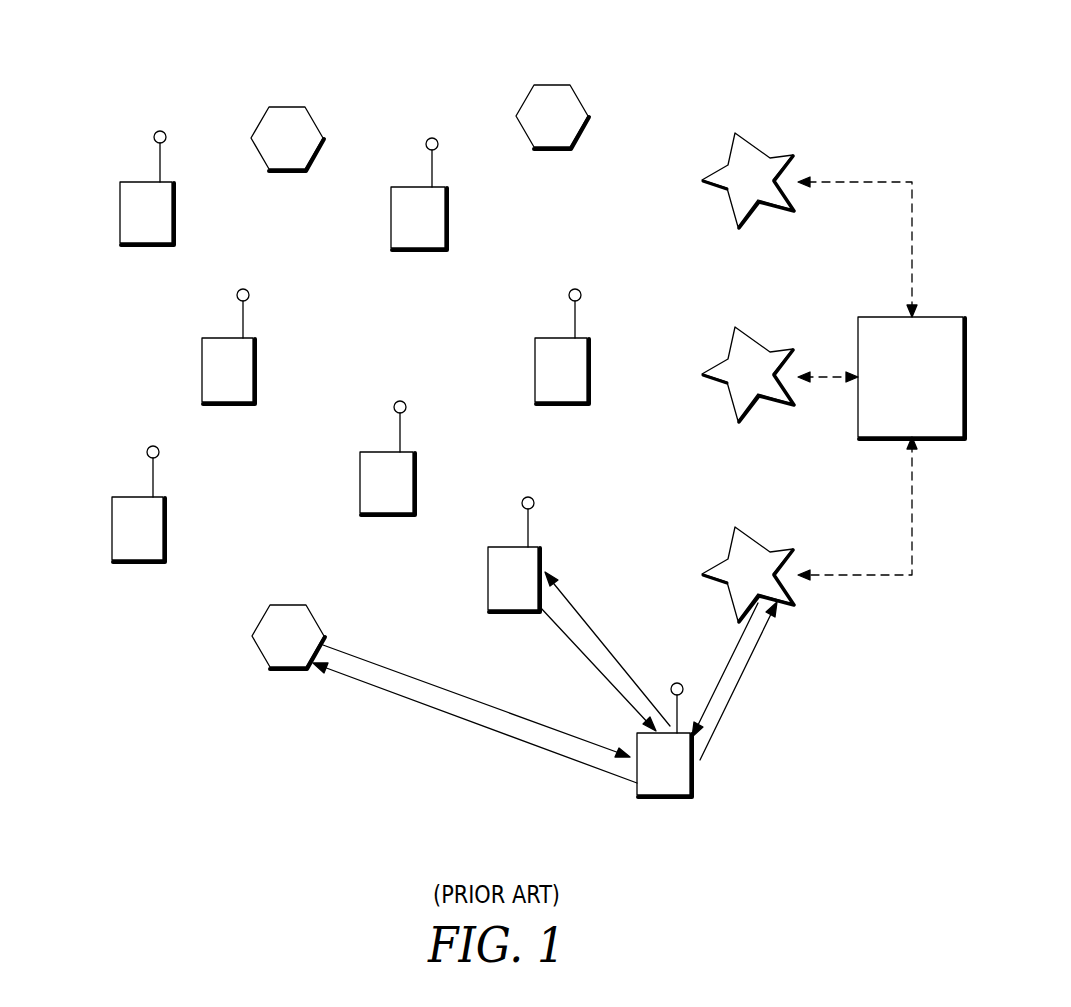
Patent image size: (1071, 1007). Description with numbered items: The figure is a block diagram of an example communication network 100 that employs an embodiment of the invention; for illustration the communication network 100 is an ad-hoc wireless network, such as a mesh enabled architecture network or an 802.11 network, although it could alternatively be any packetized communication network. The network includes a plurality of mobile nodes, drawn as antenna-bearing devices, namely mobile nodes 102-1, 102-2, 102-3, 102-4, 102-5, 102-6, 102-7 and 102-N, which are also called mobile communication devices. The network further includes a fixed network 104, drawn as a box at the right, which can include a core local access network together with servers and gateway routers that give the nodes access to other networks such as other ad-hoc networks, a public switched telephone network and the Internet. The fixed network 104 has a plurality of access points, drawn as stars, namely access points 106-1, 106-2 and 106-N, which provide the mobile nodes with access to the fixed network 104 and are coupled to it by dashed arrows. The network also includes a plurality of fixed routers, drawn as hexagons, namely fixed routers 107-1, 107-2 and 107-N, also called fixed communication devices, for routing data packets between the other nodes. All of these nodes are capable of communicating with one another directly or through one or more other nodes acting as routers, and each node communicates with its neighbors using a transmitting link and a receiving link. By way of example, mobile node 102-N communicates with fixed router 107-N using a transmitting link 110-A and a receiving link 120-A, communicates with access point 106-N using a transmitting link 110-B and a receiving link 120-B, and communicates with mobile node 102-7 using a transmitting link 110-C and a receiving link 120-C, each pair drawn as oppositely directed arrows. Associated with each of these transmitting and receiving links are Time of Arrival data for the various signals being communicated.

The communication network 100 is at (878, 57).
The mobile node 102-1 is at (124, 182).
The mobile node 102-2 is at (396, 187).
The mobile node 102-3 is at (207, 338).
The mobile node 102-4 is at (127, 497).
The mobile node 102-5 is at (365, 452).
The mobile node 102-6 is at (540, 338).
The mobile node 102-7 is at (494, 547).
The mobile node 102-N is at (664, 797).
The fixed network 104 is at (866, 317).
The access point 106-1 is at (719, 171).
The access point 106-2 is at (718, 365).
The access point 106-N is at (720, 565).
The fixed router 107-1 is at (287, 107).
The fixed router 107-2 is at (546, 85).
The fixed router 107-N is at (274, 605).
The transmitting link 110-A is at (474, 724).
The transmitting link 110-B is at (738, 689).
The transmitting link 110-C is at (578, 603).
The receiving link 120-A is at (422, 680).
The receiving link 120-B is at (735, 648).
The receiving link 120-C is at (612, 686).